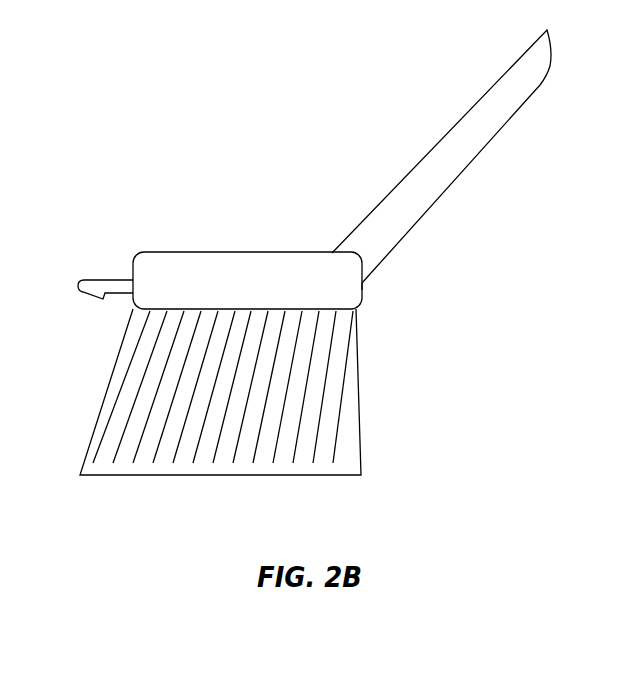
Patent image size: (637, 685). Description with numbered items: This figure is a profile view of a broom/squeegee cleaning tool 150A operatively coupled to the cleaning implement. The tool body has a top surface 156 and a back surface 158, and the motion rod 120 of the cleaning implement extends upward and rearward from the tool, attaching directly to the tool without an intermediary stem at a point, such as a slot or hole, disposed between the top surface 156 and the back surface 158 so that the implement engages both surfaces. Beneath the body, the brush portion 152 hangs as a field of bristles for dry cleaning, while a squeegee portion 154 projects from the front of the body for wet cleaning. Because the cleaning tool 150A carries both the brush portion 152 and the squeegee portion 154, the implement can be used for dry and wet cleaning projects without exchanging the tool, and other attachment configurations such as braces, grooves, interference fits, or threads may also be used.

The cleaning tool 150A is at (172, 95).
The motion rod 120 is at (433, 177).
The brush portion 152 is at (313, 436).
The squeegee portion 154 is at (100, 283).
The top surface 156 is at (260, 241).
The back surface 158 is at (373, 297).